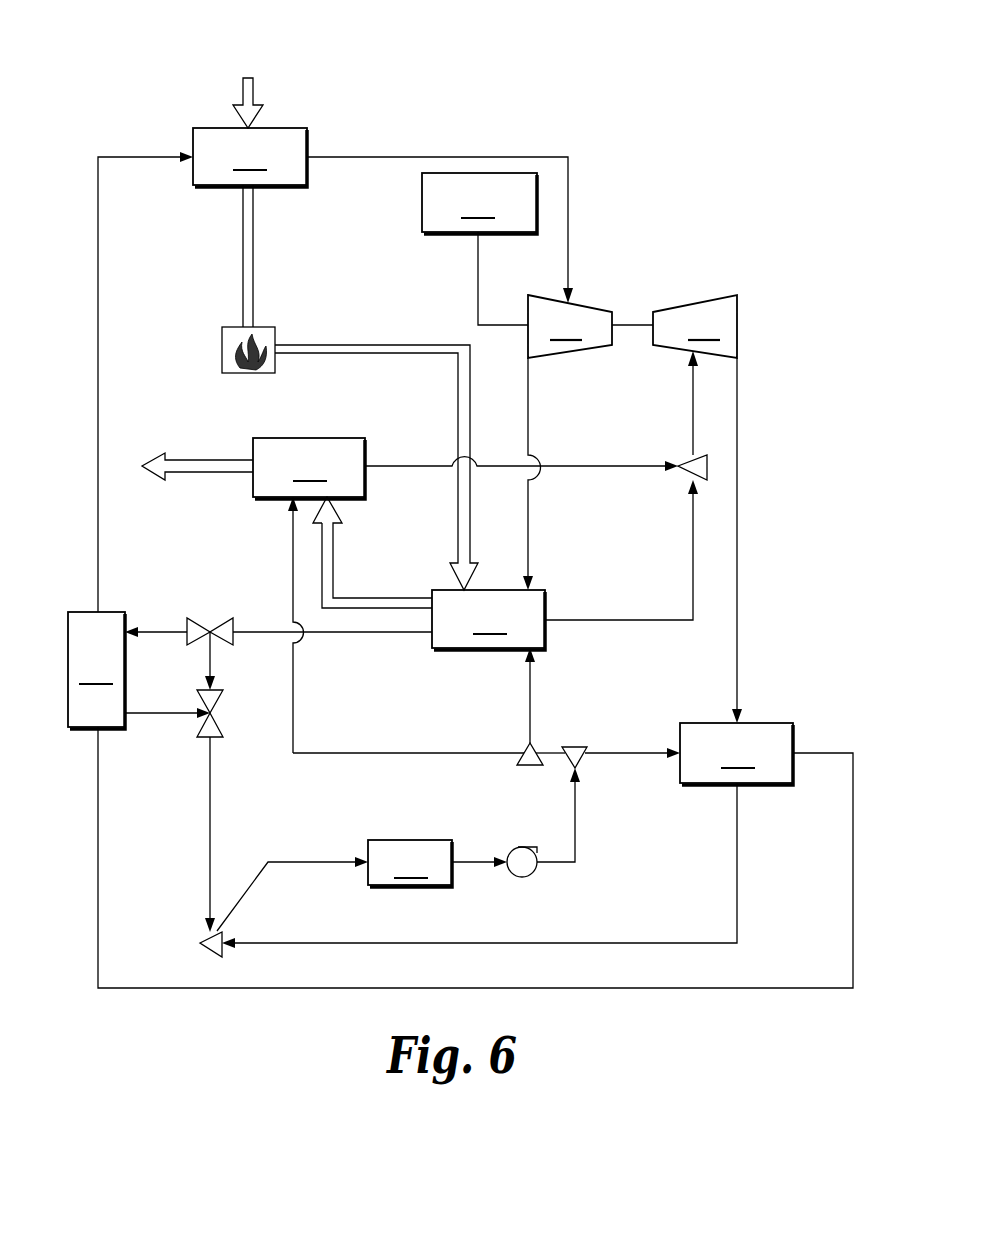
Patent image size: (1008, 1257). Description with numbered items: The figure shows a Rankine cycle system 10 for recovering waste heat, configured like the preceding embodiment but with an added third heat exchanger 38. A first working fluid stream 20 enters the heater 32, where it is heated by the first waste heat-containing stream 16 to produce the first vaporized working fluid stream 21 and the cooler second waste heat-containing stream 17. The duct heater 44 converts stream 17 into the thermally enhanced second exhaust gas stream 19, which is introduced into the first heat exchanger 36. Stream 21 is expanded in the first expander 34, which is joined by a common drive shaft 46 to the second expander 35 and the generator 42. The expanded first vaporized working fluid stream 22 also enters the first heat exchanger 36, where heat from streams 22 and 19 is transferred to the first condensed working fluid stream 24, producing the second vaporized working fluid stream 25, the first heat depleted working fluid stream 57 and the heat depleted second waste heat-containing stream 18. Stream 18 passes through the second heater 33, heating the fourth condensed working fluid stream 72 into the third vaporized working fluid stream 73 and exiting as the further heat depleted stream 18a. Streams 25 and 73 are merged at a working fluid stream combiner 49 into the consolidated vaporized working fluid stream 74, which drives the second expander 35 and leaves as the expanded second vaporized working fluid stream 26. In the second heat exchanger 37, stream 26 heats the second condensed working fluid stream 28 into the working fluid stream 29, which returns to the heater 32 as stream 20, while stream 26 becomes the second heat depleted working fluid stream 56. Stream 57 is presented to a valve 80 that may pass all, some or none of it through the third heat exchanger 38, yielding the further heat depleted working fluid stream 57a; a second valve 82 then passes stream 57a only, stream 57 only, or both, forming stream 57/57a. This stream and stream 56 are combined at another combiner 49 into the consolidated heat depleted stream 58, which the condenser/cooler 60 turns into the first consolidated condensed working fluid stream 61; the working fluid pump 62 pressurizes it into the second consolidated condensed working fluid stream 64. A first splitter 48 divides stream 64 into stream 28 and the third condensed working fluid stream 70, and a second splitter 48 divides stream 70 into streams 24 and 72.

The Rankine cycle system 10 is at (128, 70).
The first waste heat-containing stream 16 is at (256, 88).
The second waste heat-containing stream 17 is at (243, 280).
The heat depleted second waste heat-containing stream 18 is at (333, 552).
The further heat depleted stream 18a is at (180, 460).
The thermally enhanced second exhaust gas stream 19 is at (458, 556).
The first working fluid stream 20 is at (130, 157).
The first vaporized working fluid stream 21 is at (570, 220).
The expanded first vaporized working fluid stream 22 is at (528, 370).
The first condensed working fluid stream 24 is at (528, 692).
The second vaporized working fluid stream 25 is at (622, 620).
The expanded second vaporized working fluid stream 26 is at (737, 437).
The second condensed working fluid stream 28 is at (665, 752).
The working fluid stream 29 is at (838, 752).
The heater 32 is at (250, 157).
The second heater 33 is at (309, 595).
The first expander 34 is at (570, 326).
The second expander 35 is at (695, 326).
The first heat exchanger 36 is at (488, 620).
The second heat exchanger 37 is at (736, 754).
The third heat exchanger 38 is at (96, 670).
The generator 42 is at (479, 203).
The duct heater 44 is at (222, 345).
The common drive shaft 46 is at (500, 325).
The working fluid stream splitter 48 is at (522, 746).
The working fluid stream combiner 49 is at (690, 458).
The second heat depleted working fluid stream 56 is at (737, 915).
The first heat depleted working fluid stream 57 is at (206, 648).
The further heat depleted working fluid stream 57a is at (182, 715).
The consolidated heat depleted stream 58 is at (252, 880).
The condenser/cooler 60 is at (410, 863).
The first consolidated condensed working fluid stream 61 is at (470, 864).
The working fluid pump 62 is at (522, 847).
The second consolidated condensed working fluid stream 64 is at (578, 862).
The third condensed working fluid stream 70 is at (545, 745).
The fourth condensed working fluid stream 72 is at (440, 753).
The third vaporized working fluid stream 73 is at (610, 466).
The consolidated vaporized working fluid stream 74 is at (693, 400).
The valve 80 is at (196, 620).
The second valve 82 is at (215, 740).